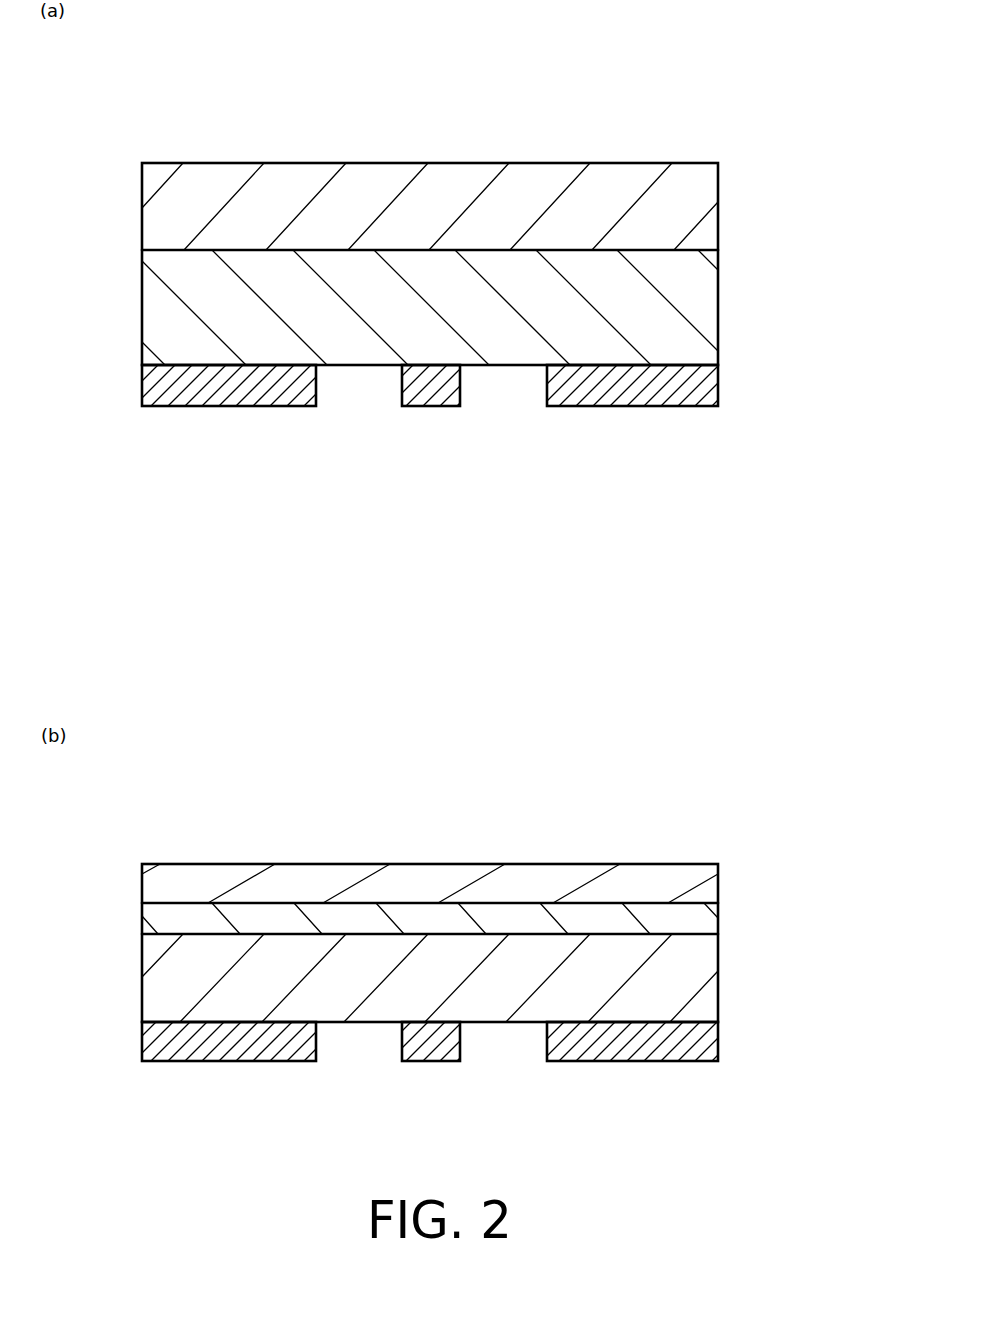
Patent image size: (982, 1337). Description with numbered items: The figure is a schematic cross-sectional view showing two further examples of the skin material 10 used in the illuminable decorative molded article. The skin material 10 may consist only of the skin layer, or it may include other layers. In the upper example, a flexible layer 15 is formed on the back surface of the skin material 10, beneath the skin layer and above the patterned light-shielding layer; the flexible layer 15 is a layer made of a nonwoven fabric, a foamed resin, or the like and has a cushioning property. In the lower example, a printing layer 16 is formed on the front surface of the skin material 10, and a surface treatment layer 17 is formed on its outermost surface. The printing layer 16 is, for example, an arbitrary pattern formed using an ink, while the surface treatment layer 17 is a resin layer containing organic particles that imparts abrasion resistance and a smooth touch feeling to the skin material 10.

The skin material 10 is at (513, 264).
The flexible layer 15 is at (478, 307).
The printing layer 16 is at (718, 918).
The surface treatment layer 17 is at (718, 875).